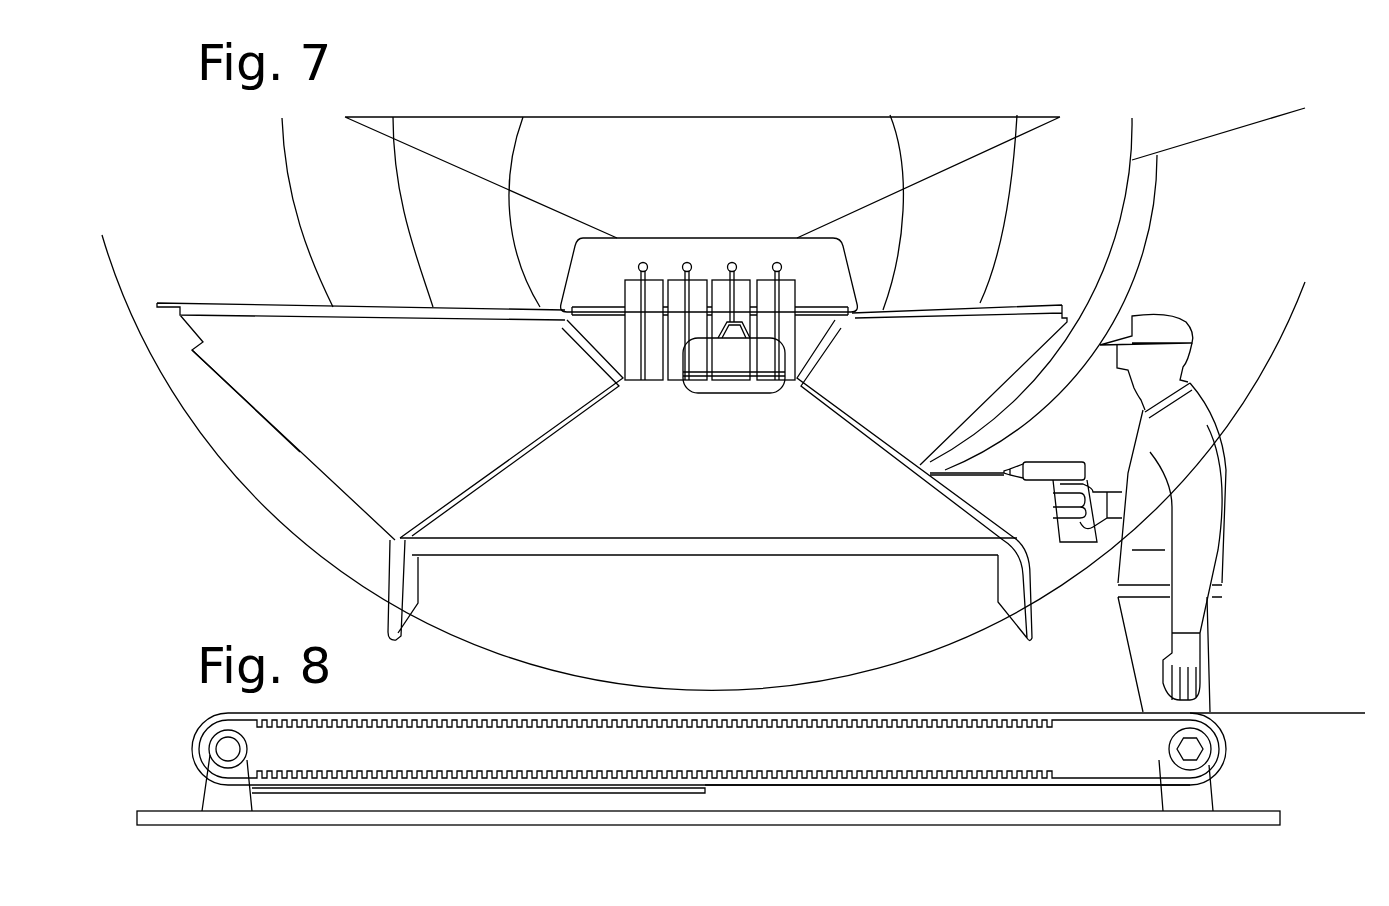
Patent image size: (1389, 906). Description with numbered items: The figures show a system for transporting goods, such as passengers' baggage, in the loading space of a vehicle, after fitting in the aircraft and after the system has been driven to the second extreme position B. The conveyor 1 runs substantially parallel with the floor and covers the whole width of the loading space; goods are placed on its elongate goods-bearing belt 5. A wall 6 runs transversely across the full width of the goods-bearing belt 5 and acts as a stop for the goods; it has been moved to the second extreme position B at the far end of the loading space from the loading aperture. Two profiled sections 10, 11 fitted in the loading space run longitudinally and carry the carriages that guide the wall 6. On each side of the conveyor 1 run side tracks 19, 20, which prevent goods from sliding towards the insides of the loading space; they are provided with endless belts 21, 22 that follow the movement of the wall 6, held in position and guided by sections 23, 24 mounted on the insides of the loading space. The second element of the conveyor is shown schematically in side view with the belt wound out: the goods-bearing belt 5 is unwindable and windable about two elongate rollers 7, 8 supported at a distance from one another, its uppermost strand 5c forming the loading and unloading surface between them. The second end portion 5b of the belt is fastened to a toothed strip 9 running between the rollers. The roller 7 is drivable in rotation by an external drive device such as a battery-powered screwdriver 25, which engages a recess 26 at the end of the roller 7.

In FIG. 7, the conveyor 1 is at (603, 475).
In FIG. 7, the goods-bearing belt 5 is at (710, 570).
In FIG. 8, the goods-bearing belt 5 is at (709, 762).
In FIG. 7, the wall 6 is at (709, 280).
In FIG. 7, the profiled section 10 is at (417, 532).
In FIG. 7, the profiled section 11 is at (965, 510).
In FIG. 7, the side track 19 is at (207, 298).
In FIG. 7, the side track 20 is at (968, 298).
In FIG. 7, the endless belt 21 is at (340, 340).
In FIG. 7, the endless belt 22 is at (895, 330).
In FIG. 7, the section 23 is at (275, 303).
In FIG. 7, the section 24 is at (1023, 307).
In FIG. 7, the battery-powered screwdriver 25 is at (1070, 468).
In FIG. 7, the second extreme position B is at (683, 245).
In FIG. 8, the second end portion 5b is at (442, 790).
In FIG. 8, the uppermost strand 5c is at (442, 713).
In FIG. 8, the roller 7 is at (1241, 768).
In FIG. 8, the roller 8 is at (210, 745).
In FIG. 8, the toothed strip 9 is at (785, 782).
In FIG. 8, the recess 26 is at (1192, 750).